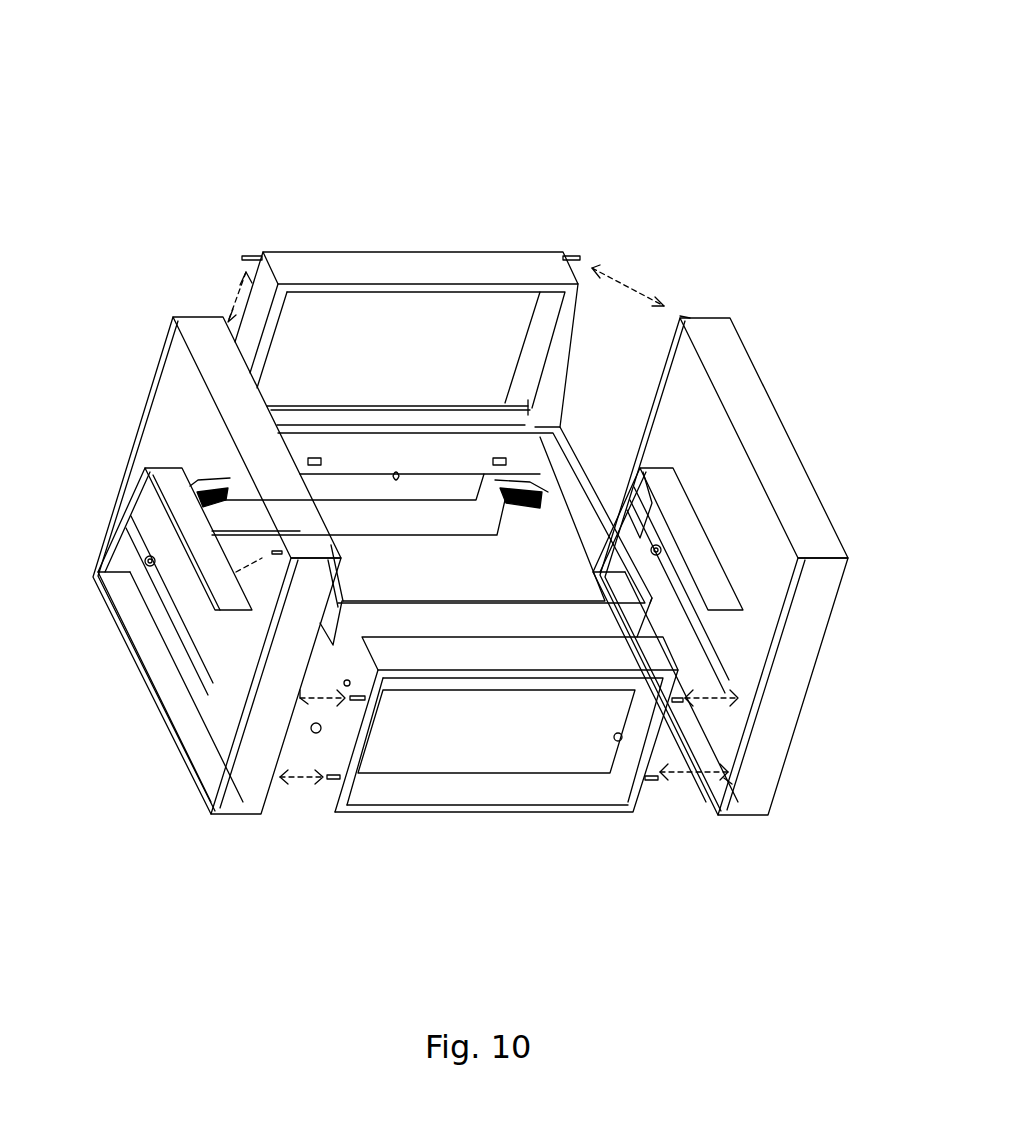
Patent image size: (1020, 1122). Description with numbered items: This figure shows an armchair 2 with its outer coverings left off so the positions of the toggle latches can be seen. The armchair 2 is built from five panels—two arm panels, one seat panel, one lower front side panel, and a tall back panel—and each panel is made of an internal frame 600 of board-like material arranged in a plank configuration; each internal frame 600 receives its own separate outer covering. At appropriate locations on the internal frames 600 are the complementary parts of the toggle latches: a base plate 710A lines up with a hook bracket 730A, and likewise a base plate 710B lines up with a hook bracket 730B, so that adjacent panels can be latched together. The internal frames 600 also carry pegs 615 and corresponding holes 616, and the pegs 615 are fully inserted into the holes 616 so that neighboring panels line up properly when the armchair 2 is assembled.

The armchair 2 is at (328, 108).
The internal frame 600 is at (320, 268).
The peg 615 is at (250, 257).
The hole 616 is at (688, 318).
The base plate 710A is at (212, 497).
The base plate 710B is at (498, 492).
The hook bracket 730A is at (147, 567).
The hook bracket 730B is at (661, 552).